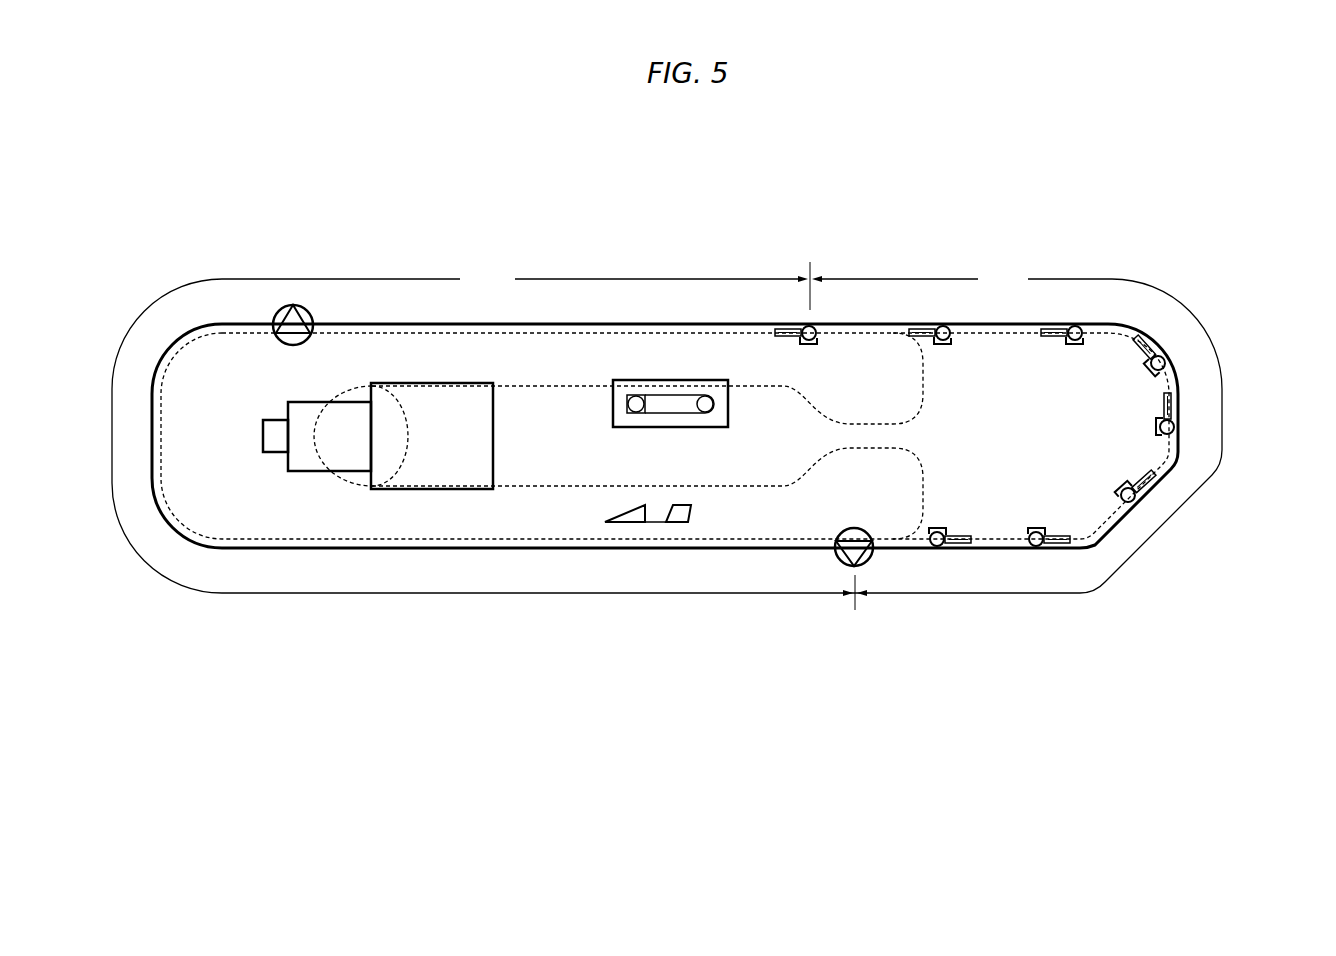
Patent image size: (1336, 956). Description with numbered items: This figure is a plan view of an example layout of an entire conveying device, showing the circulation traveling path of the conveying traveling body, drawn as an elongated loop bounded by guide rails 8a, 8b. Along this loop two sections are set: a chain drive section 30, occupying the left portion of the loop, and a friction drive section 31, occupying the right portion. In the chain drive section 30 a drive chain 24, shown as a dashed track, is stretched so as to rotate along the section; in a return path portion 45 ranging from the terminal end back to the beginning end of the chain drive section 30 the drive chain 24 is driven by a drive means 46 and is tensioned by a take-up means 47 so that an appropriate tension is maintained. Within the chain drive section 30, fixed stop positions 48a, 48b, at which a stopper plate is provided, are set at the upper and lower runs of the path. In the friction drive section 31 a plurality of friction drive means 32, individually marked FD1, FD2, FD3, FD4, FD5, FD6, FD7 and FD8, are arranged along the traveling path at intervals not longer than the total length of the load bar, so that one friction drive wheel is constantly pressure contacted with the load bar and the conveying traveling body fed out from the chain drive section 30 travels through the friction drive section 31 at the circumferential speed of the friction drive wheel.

The conveyor rail 8a is at (423, 323).
The conveyor rail 8b is at (1180, 376).
The drive chain 24 is at (547, 331).
The chain drive section 30 is at (516, 286).
The friction drive section 31 is at (962, 438).
The friction drive means 32 is at (1010, 433).
The return path portion 45 is at (642, 488).
The drive means 46 is at (672, 383).
The take-up means 47 is at (358, 483).
The fixed stop position 48a is at (837, 567).
The fixed stop position 48b is at (294, 305).
The detector FD1 is at (796, 347).
The detector FD2 is at (939, 347).
The detector FD3 is at (1061, 346).
The detector FD4 is at (1136, 358).
The detector FD5 is at (1144, 415).
The detector FD6 is at (1120, 484).
The detector FD7 is at (1046, 526).
The detector FD8 is at (950, 526).